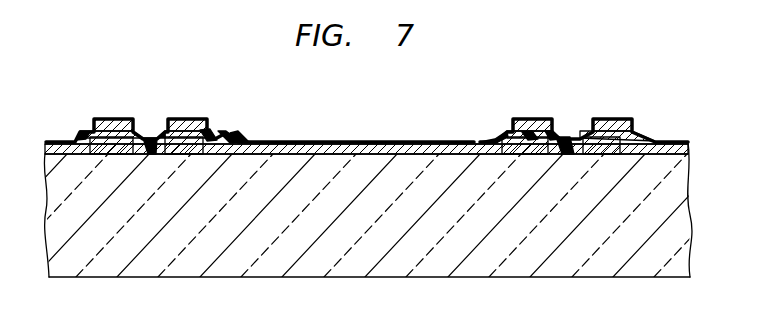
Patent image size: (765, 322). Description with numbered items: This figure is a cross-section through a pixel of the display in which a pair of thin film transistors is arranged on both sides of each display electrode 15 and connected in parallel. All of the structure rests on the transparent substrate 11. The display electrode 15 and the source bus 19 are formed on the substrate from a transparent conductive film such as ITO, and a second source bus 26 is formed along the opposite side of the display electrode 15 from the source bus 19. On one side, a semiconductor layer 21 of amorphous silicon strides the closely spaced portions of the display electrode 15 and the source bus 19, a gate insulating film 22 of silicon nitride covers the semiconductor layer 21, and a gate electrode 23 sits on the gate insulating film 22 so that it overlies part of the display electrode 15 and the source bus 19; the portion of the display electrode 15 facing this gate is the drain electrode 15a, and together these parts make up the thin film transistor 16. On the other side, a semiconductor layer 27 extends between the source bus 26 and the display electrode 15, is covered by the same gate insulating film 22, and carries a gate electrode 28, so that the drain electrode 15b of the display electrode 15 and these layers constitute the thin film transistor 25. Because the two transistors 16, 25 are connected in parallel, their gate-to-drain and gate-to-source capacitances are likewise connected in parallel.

The transparent substrate 11 is at (684, 232).
The display electrode 15 is at (357, 140).
The drain electrode 15a is at (78, 133).
The drain electrode 15b is at (237, 133).
The thin film transistor 16 is at (92, 130).
The source bus 19 is at (148, 137).
The semiconductor layer 21 is at (548, 128).
The gate insulating film 22 is at (238, 138).
The gate electrode 23 is at (116, 119).
The thin film transistor 25 is at (218, 130).
The source bus 26 is at (163, 130).
The semiconductor layer 27 is at (198, 128).
The gate electrode 28 is at (183, 119).